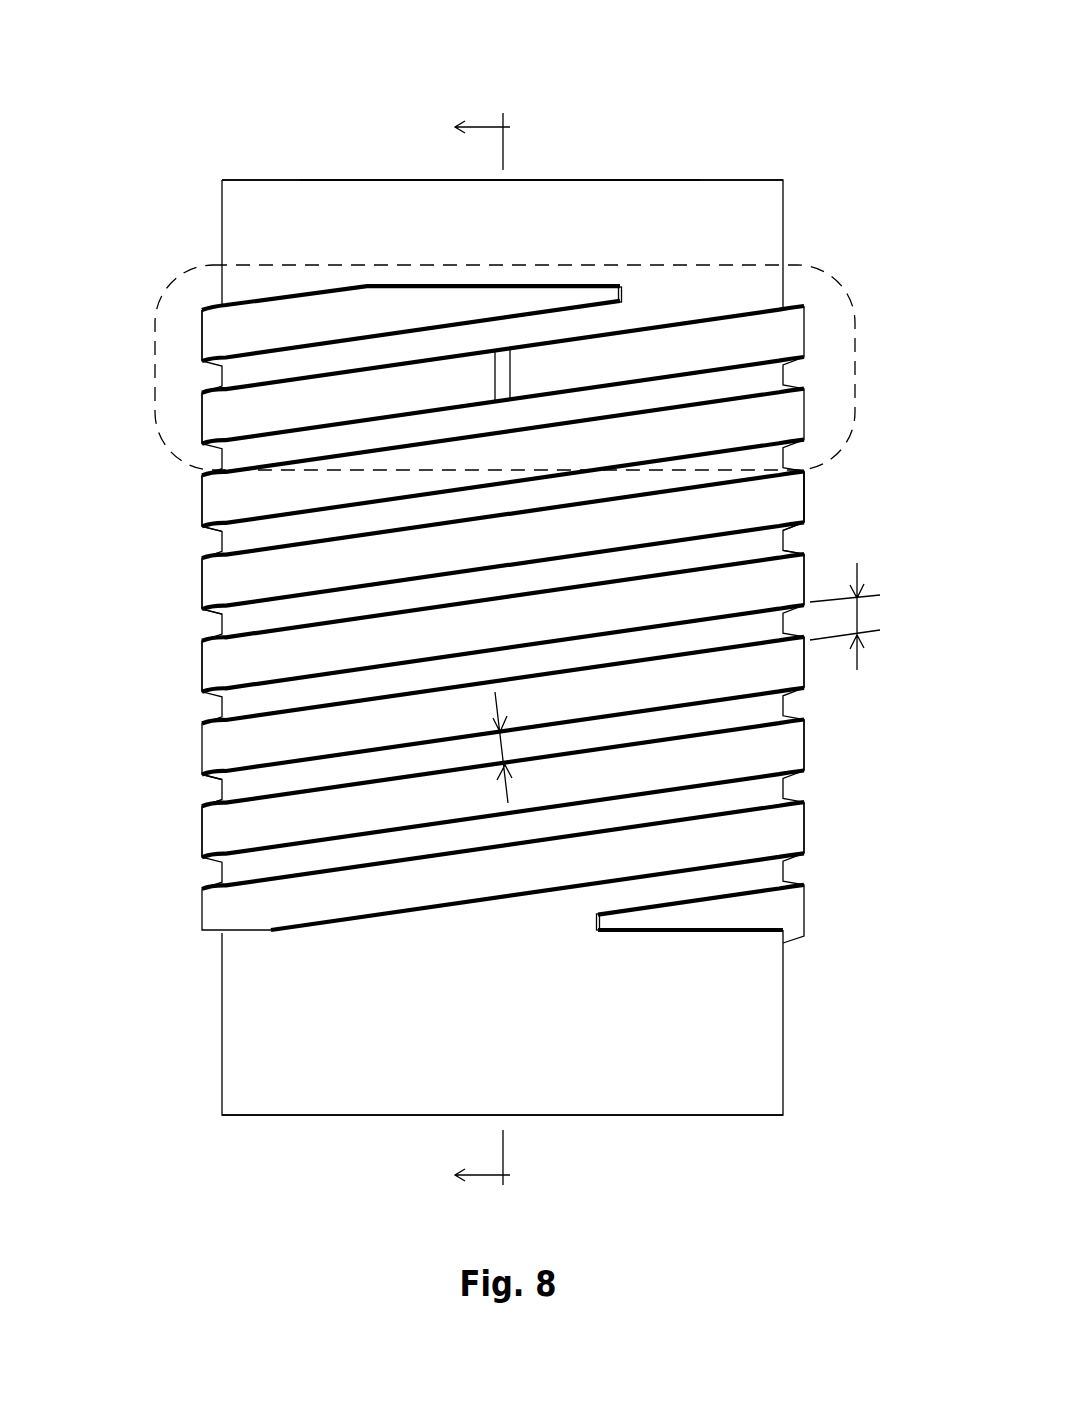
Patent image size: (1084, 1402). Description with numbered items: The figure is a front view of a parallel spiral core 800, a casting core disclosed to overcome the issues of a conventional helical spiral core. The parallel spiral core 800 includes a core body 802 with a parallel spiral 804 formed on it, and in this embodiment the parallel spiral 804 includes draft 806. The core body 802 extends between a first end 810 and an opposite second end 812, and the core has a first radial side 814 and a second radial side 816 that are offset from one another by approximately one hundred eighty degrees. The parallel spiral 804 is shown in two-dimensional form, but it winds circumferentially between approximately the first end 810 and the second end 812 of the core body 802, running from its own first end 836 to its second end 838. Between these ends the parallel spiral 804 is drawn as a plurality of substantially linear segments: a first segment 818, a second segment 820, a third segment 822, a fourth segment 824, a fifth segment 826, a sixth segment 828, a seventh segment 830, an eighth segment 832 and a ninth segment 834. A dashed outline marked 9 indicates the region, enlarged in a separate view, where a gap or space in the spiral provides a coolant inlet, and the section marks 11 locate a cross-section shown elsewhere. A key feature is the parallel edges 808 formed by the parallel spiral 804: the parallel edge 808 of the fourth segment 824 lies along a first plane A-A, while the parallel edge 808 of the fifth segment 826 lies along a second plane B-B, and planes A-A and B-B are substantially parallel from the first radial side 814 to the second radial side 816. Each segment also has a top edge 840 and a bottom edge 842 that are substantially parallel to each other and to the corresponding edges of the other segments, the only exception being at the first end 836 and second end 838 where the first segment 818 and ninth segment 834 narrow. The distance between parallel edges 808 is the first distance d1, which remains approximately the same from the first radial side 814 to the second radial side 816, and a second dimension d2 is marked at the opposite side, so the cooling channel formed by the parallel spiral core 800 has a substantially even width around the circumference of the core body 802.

The parallel spiral core 800 is at (852, 130).
The core body 802 is at (762, 222).
The parallel spiral 804 is at (790, 748).
The draft 806 is at (799, 549).
The parallel edges 808 is at (213, 555).
The first end 810 is at (324, 164).
The second end 812 is at (659, 1130).
The first radial side 814 is at (880, 850).
The second radial side 816 is at (131, 464).
The first segment 818 is at (273, 328).
The second segment 820 is at (790, 343).
The third segment 822 is at (782, 393).
The fourth segment 824 is at (800, 452).
The fifth segment 826 is at (217, 658).
The sixth segment 828 is at (772, 662).
The seventh segment 830 is at (297, 812).
The eighth segment 832 is at (773, 830).
The ninth segment 834 is at (790, 920).
The first end of the parallel spiral 836 is at (623, 295).
The second end of the parallel spiral 838 is at (600, 922).
The top edge 840 is at (320, 875).
The bottom edge 842 is at (365, 914).
The FIG. 9 detail region 9 is at (178, 280).
The section line 11 is at (472, 646).
The first plane A- A is at (790, 500).
The second plane B- B is at (827, 556).
The first distance d1 is at (503, 755).
The diameter d2 is at (857, 613).